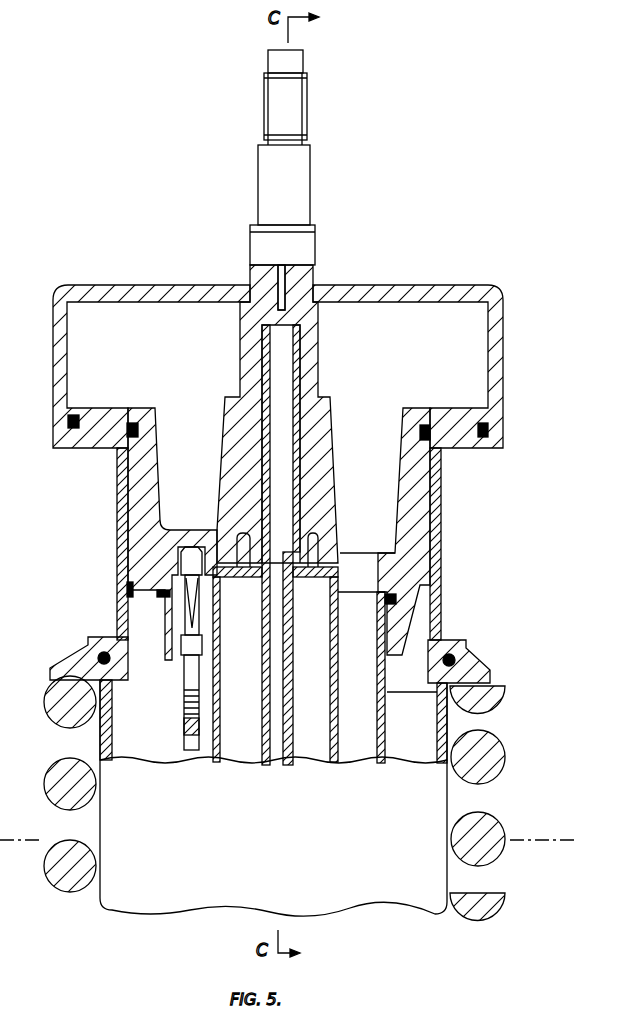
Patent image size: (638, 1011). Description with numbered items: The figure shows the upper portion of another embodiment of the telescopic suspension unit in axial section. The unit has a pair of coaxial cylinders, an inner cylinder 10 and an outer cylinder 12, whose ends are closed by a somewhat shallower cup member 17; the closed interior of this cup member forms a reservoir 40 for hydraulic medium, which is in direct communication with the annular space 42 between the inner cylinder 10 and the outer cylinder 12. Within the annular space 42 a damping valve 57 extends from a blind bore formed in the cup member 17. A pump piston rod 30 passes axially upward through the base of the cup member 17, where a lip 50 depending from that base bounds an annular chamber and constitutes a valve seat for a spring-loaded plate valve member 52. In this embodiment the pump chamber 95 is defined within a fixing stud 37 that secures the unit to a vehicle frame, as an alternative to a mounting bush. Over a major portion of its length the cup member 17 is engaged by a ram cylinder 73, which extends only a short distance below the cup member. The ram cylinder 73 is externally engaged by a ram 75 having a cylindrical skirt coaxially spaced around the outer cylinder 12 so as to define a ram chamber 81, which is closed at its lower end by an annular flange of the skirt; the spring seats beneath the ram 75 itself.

The fixing stud 37 is at (267, 186).
The pump chamber 95 is at (272, 298).
The reservoir 40 is at (163, 365).
The lip 50 is at (326, 546).
The spring-loaded plate valve member 52 is at (340, 568).
The cup member 17 is at (413, 497).
The ram cylinder 73 is at (440, 556).
The ram 75 is at (90, 672).
The ram chamber 81 is at (137, 741).
The outer cylinder 12 is at (384, 762).
The annular space 42 is at (345, 758).
The inner cylinder 10 is at (334, 728).
The pump piston rod 30 is at (262, 677).
The damping valve 57 is at (168, 654).